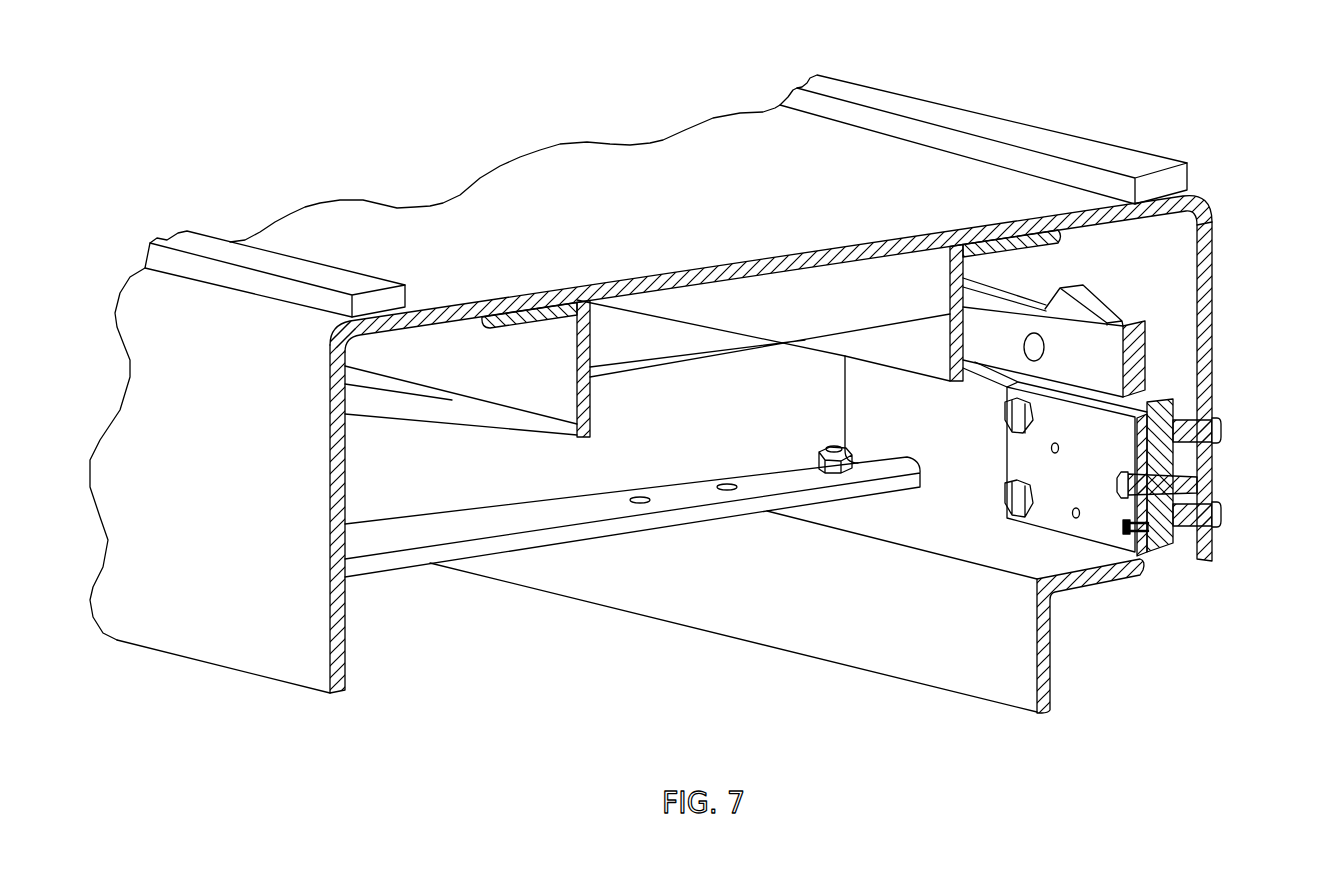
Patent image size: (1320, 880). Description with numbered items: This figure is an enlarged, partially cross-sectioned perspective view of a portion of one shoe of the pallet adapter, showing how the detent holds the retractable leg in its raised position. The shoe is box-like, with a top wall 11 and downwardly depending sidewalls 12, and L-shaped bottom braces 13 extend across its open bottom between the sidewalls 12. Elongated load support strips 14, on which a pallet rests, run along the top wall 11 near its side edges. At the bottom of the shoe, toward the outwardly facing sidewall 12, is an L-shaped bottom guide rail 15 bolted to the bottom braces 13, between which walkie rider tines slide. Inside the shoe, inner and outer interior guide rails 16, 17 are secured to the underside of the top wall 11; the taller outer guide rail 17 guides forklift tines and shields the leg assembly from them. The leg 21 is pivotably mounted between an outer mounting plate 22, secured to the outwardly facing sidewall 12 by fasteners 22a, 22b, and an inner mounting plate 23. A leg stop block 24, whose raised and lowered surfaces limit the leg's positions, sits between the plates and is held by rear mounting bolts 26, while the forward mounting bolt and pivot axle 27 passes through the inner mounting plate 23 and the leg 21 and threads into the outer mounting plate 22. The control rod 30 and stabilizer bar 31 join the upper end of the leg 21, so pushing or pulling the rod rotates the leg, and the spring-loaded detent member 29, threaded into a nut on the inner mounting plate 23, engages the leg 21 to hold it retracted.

The top wall 11 is at (698, 217).
The sidewall 12 is at (223, 488).
The bottom brace 13 is at (705, 428).
The load support strip 14 is at (375, 278).
The bottom guide rail 15 is at (918, 617).
The inner interior guide rail 16 is at (543, 383).
The outer interior guide rail 17 is at (918, 318).
The leg 21 is at (1153, 403).
The outer mounting plate 22 is at (1173, 398).
The fastener 22a is at (1221, 432).
The fastener 22b is at (1221, 515).
The inner mounting plate 23 is at (1093, 530).
The leg stop block 24 is at (1033, 380).
The rear mounting bolt 26 is at (1012, 503).
The forward mounting bolt and pivot axle 27 is at (1115, 485).
The detent member 29 is at (1133, 534).
The control rod 30 is at (1124, 334).
The stabilizer bar 31 is at (1040, 297).